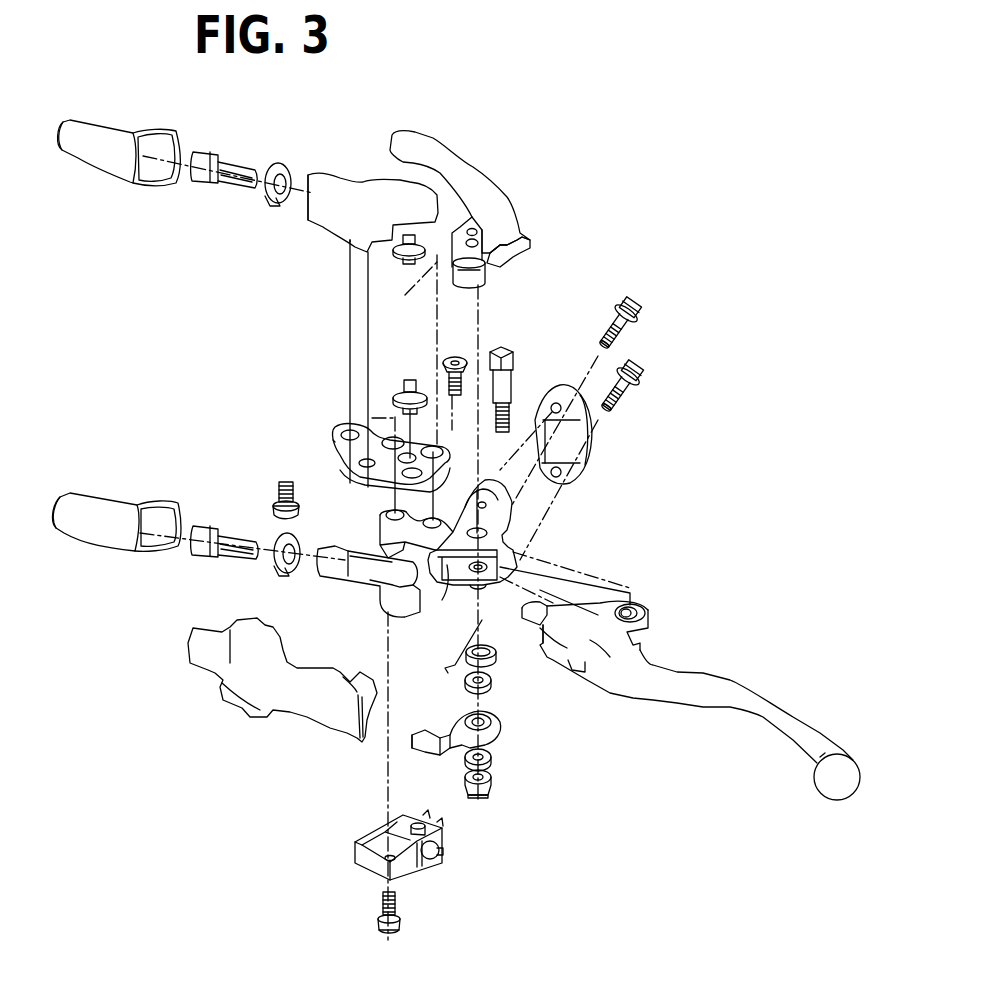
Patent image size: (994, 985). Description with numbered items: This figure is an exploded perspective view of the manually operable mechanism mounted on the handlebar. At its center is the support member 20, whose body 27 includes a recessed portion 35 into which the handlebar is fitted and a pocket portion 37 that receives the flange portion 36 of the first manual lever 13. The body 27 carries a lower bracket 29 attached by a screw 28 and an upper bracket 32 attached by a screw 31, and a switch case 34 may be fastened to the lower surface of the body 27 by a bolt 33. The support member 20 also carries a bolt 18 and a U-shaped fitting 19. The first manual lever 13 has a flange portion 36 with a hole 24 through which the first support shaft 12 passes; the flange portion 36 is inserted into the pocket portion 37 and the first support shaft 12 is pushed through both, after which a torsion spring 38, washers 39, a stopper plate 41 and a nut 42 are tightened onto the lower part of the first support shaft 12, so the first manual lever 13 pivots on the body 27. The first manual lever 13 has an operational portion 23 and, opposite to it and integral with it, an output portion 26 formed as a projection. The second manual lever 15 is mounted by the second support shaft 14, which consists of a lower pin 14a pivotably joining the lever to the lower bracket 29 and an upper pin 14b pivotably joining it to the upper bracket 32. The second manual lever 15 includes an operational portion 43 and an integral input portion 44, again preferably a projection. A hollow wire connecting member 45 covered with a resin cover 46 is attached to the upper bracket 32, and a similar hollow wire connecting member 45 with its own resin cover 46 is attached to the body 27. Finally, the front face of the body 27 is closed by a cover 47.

The first support shaft 12 is at (513, 377).
The first manual lever 13 is at (633, 702).
The second support shaft 14 is at (283, 300).
The lower pin 14a is at (400, 390).
The upper pin 14b is at (398, 262).
The second manual lever 15 is at (506, 194).
The bolt 18 is at (638, 372).
The U-shaped fitting 19 is at (560, 385).
The support member 20 is at (287, 453).
The operational portion 23 is at (783, 735).
The hole 24 is at (636, 606).
The output portion 26 is at (553, 592).
The body 27 is at (372, 602).
The screw 28 is at (460, 352).
The lower bracket 29 is at (335, 432).
The screw 31 is at (278, 497).
The upper bracket 32 is at (302, 233).
The bolt 33 is at (380, 918).
The switch case 34 is at (355, 852).
The recessed portion 35 is at (517, 533).
The flange portion 36 is at (655, 627).
The pocket portion 37 is at (442, 600).
The torsion spring 38 is at (497, 657).
The washers 39 is at (492, 680).
The stopper plate 41 is at (500, 725).
The nut 42 is at (493, 785).
The operational portion 43 is at (448, 153).
The input portion 44 is at (530, 245).
The hollow wire connecting member 45 is at (222, 184).
The resin cover 46 is at (96, 176).
The cover 47 is at (306, 705).